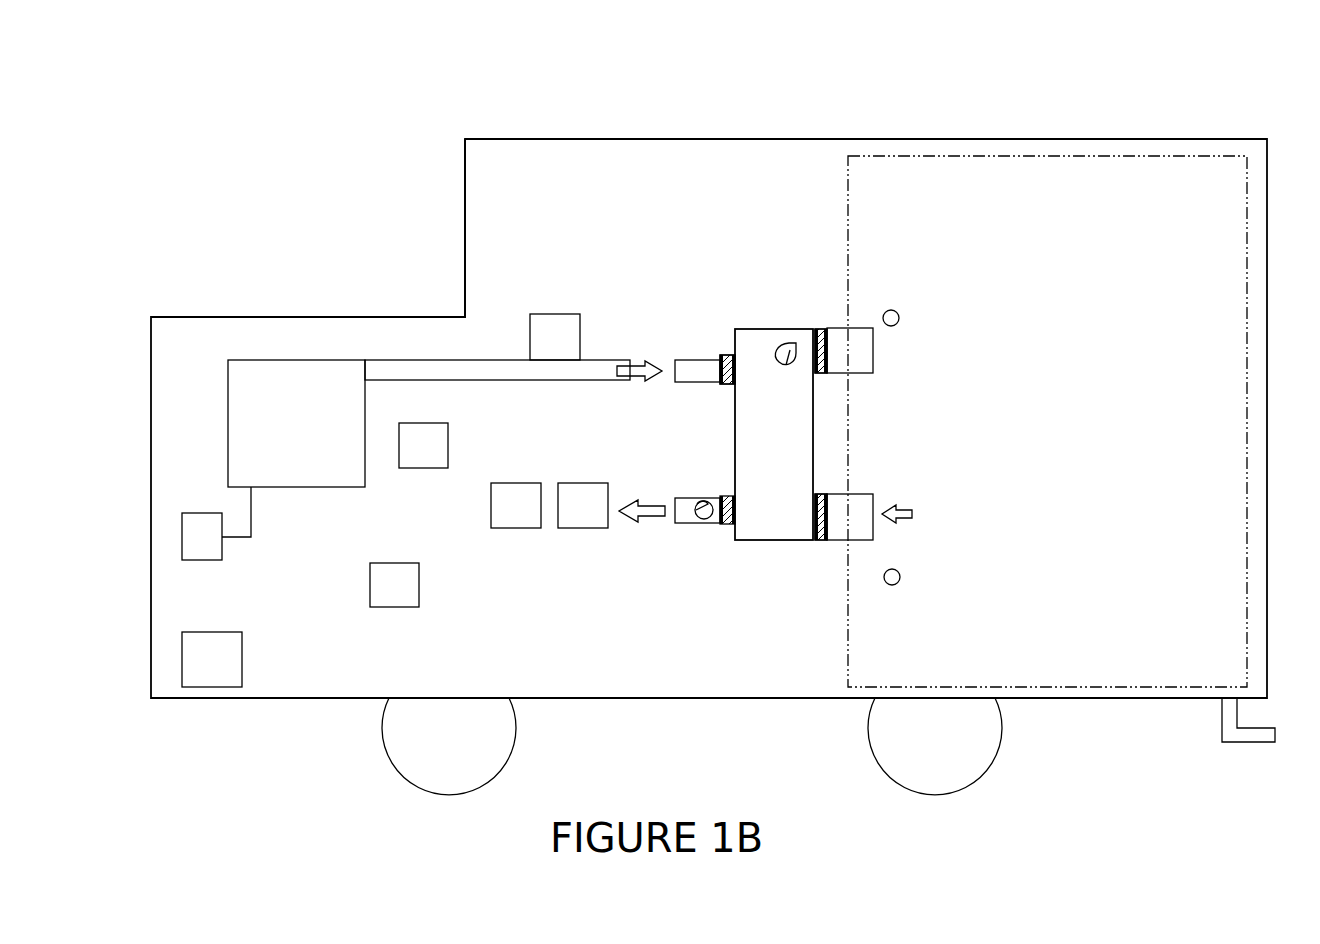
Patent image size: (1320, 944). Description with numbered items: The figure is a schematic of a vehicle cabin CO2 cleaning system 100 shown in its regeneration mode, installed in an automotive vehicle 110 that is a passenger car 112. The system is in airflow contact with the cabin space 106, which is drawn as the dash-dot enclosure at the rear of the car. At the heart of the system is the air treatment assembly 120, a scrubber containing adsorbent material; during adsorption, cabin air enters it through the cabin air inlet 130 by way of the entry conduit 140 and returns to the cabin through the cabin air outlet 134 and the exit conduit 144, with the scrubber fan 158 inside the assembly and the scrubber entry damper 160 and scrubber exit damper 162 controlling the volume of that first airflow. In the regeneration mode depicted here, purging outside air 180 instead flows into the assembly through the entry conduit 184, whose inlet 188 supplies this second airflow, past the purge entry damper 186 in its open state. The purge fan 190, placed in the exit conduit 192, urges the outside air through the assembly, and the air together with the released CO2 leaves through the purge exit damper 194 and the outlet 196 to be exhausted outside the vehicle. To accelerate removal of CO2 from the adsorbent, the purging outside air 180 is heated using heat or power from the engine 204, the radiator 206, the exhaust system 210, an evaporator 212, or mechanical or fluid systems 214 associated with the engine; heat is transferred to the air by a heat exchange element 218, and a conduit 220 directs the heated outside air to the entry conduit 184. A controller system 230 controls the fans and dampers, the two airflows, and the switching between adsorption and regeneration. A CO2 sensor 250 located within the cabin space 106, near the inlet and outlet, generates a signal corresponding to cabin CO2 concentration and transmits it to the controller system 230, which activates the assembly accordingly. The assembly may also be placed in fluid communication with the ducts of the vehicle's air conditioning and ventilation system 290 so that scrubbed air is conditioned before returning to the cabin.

The vehicle cabin CO2 cleaning system 100 is at (150, 101).
The cabin space 106 is at (975, 156).
The automotive vehicle 110 is at (465, 139).
The passenger car 112 is at (640, 139).
The air treatment assembly 120 is at (776, 328).
The cabin air inlet 130 is at (827, 541).
The cabin air outlet 134 is at (821, 328).
The entry conduit 140 is at (860, 500).
The exit conduit 144 is at (857, 365).
The scrubber fan 158 is at (786, 365).
The scrubber entry damper 160 is at (818, 541).
The scrubber exit damper 162 is at (818, 330).
The purging outside air 180 is at (642, 362).
The entry conduit 184 is at (712, 360).
The purge entry damper 186 is at (732, 384).
The inlet 188 is at (724, 378).
The purge fan 190 is at (705, 498).
The exit conduit 192 is at (676, 523).
The purge exit damper 194 is at (731, 527).
The outlet 196 is at (722, 526).
The engine 204 is at (300, 488).
The radiator 206 is at (425, 468).
The exhaust system 210 is at (513, 529).
The evaporator 212 is at (392, 608).
The mechanical or fluid systems 214 is at (205, 560).
The heat exchange element 218 is at (558, 337).
The conduit 220 is at (500, 380).
The controller system 230 is at (212, 688).
The CO2 sensor 250 is at (891, 310).
The air conditioning and ventilation system 290 is at (582, 529).